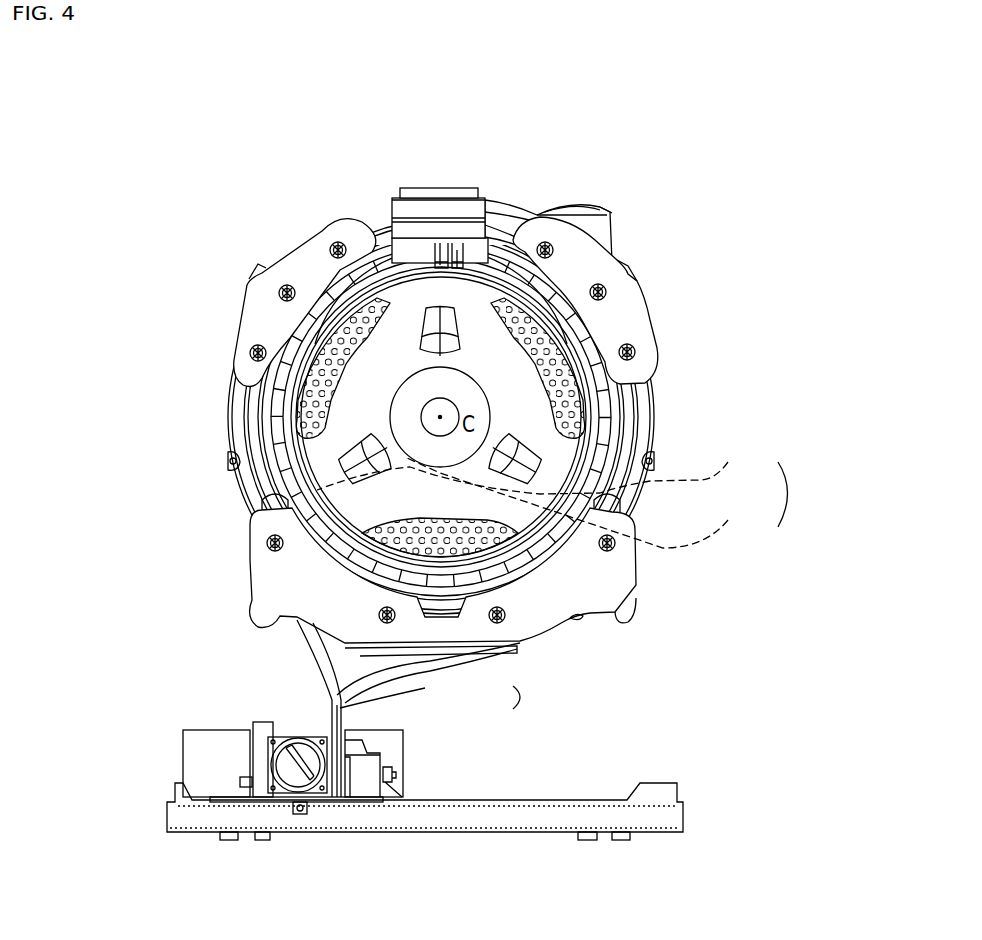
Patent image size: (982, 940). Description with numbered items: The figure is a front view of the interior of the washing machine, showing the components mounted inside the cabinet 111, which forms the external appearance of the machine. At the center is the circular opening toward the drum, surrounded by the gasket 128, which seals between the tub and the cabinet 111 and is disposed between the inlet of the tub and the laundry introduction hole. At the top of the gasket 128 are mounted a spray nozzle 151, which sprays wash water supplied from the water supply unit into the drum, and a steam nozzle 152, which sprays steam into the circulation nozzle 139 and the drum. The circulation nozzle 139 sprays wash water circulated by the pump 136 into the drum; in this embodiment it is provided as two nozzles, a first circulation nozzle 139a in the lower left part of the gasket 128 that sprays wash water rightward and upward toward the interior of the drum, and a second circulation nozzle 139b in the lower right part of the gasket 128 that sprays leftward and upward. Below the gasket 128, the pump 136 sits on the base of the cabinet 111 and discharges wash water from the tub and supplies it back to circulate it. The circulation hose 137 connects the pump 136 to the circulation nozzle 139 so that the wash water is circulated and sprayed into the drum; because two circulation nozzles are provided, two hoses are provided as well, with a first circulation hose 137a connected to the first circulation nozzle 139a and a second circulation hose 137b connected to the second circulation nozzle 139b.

The cabinet 111 is at (492, 820).
The gasket 128 is at (275, 457).
The pump 136 is at (298, 790).
The circulation hose 137 is at (534, 702).
The first circulation hose 137a is at (345, 692).
The second circulation hose 137b is at (420, 663).
The circulation nozzle 139 is at (802, 494).
The first circulation nozzle 139a is at (591, 503).
The second circulation nozzle 139b is at (546, 471).
The spray nozzle 151 is at (463, 243).
The steam nozzle 152 is at (443, 243).